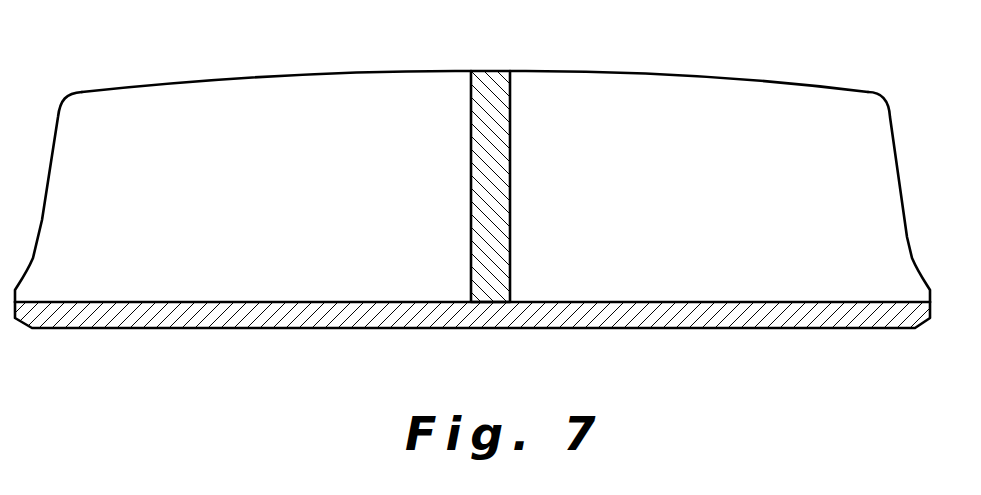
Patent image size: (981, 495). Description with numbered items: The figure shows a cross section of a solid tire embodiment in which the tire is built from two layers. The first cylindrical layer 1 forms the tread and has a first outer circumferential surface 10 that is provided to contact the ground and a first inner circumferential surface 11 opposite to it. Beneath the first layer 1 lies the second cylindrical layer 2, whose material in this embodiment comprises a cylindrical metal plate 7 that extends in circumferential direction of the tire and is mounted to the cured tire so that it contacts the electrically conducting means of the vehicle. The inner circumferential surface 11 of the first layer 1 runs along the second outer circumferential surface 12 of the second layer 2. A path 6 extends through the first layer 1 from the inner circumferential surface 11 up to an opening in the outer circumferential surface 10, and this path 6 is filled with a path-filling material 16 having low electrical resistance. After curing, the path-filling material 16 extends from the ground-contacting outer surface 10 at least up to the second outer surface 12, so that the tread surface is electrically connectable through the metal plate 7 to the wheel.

The first cylindrical layer 1 is at (472, 156).
The second cylindrical layer 2 is at (481, 321).
The path 6 is at (538, 181).
The cylindrical metal plate 7 is at (625, 315).
The first outer circumferential surface 10 is at (698, 76).
The first inner circumferential surface 11 is at (755, 302).
The second outer circumferential surface 12 is at (805, 303).
The path-filling material 16 is at (495, 272).